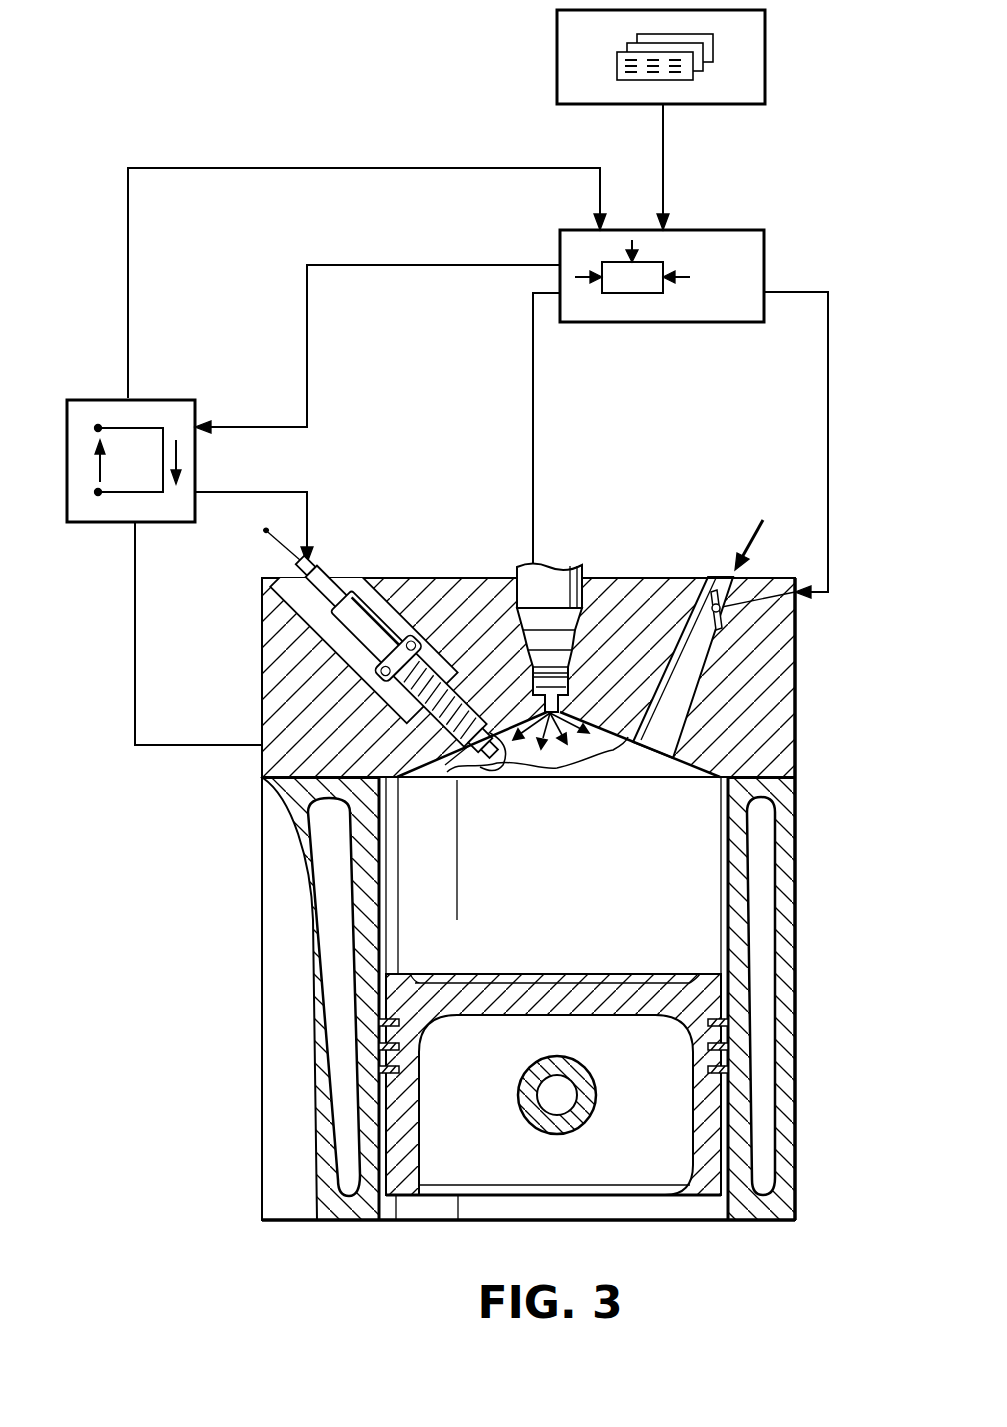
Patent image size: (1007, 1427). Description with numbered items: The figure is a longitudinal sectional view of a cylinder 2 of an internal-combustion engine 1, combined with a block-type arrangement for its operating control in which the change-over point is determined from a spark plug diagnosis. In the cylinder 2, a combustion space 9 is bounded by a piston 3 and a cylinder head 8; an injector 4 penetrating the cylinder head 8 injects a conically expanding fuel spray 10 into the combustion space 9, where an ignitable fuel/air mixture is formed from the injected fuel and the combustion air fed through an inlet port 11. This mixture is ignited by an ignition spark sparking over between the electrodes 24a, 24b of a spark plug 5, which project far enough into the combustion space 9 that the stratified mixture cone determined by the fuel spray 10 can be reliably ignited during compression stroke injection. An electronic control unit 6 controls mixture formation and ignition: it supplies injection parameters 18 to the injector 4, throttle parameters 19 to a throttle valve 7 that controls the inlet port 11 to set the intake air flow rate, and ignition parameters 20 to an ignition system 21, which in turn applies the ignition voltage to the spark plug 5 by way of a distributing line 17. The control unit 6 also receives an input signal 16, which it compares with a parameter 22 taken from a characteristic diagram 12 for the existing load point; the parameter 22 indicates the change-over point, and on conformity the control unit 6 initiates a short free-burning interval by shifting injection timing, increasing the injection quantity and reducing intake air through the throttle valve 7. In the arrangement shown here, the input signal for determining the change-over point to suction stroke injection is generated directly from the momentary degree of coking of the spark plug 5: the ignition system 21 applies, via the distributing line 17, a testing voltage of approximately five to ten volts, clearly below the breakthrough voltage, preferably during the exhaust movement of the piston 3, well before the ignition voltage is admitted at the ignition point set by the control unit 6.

The internal-combustion engine 1 is at (236, 1168).
The cylinder 2 is at (790, 848).
The piston 3 is at (712, 995).
The injector 4 is at (560, 577).
The spark plug 5 is at (405, 652).
The electronic control unit 6 is at (764, 265).
The throttle valve 7 is at (722, 600).
The cylinder head 8 is at (263, 773).
The combustion space 9 is at (546, 909).
The fuel spray 10 is at (548, 725).
The inlet port 11 is at (702, 678).
The characteristic diagram 12 is at (765, 47).
The input signal 16 is at (450, 169).
The distributing line 17 is at (237, 493).
The injection parameters 18 is at (533, 430).
The throttle parameters 19 is at (828, 380).
The ignition parameters 20 is at (318, 264).
The ignition system 21 is at (108, 523).
The parameter 22 is at (663, 172).
The electrode 24a is at (438, 776).
The electrode 24b is at (505, 760).